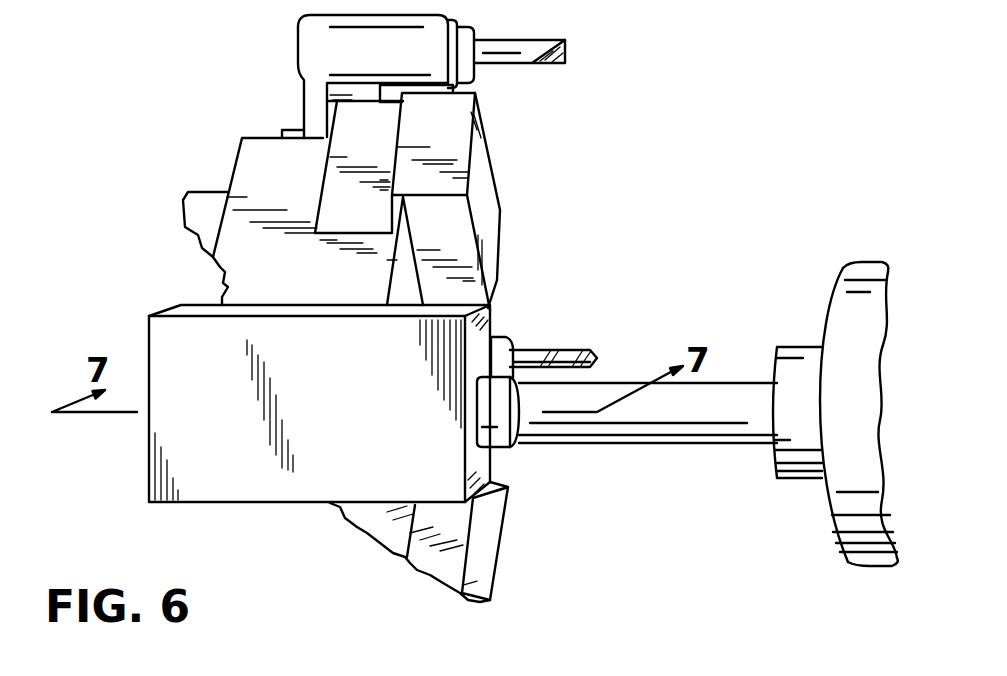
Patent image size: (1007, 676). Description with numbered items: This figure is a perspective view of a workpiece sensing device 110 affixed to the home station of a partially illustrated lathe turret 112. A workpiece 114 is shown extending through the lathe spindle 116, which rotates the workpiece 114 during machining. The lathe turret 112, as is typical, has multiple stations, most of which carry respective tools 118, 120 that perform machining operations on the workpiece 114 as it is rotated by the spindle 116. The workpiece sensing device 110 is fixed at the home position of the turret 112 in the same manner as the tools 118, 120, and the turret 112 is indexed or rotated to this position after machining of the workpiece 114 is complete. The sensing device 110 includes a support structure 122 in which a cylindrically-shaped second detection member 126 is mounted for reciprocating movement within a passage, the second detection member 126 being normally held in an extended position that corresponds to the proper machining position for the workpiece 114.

The workpiece sensing device 110 is at (266, 512).
The lathe turret 112 is at (219, 152).
The workpiece 114 is at (636, 448).
The lathe spindle 116 is at (797, 347).
The tool 118 is at (523, 65).
The tool 120 is at (573, 347).
The support structure 122 is at (335, 310).
The second detection member 126 is at (511, 460).